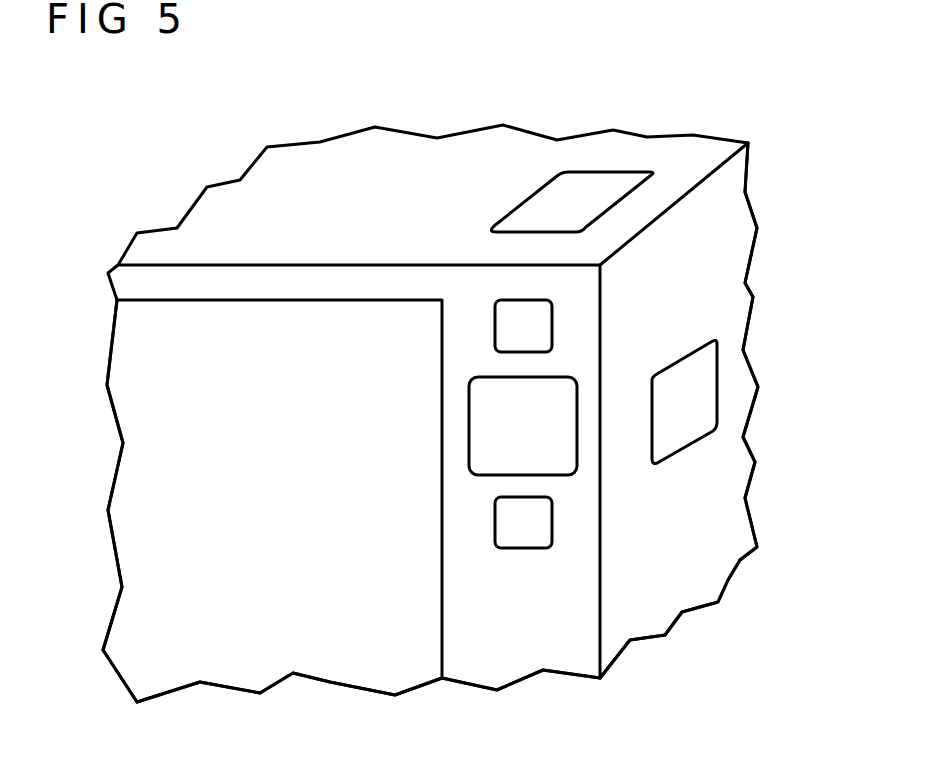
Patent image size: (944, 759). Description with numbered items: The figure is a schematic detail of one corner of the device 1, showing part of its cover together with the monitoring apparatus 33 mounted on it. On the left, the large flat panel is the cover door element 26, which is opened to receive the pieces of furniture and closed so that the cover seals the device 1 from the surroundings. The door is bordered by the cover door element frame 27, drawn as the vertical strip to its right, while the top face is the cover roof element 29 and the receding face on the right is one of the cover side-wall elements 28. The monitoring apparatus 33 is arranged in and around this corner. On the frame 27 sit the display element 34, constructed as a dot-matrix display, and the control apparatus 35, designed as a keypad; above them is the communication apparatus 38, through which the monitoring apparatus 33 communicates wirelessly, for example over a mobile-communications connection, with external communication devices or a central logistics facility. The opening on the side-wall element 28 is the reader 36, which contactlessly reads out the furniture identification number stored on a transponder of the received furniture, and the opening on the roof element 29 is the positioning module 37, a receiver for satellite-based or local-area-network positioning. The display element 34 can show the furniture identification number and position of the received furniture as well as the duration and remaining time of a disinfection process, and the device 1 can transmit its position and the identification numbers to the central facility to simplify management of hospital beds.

The device 1 is at (200, 153).
The cover door element 26 is at (143, 515).
The cover door element frame 27 is at (580, 310).
The cover side-wall element 28 is at (703, 547).
The cover roof element 29 is at (322, 183).
The monitoring apparatus 33 is at (693, 660).
The display element 34 is at (555, 460).
The control apparatus 35 is at (523, 533).
The reader 36 is at (697, 403).
The positioning module 37 is at (598, 187).
The communication apparatus 38 is at (510, 313).